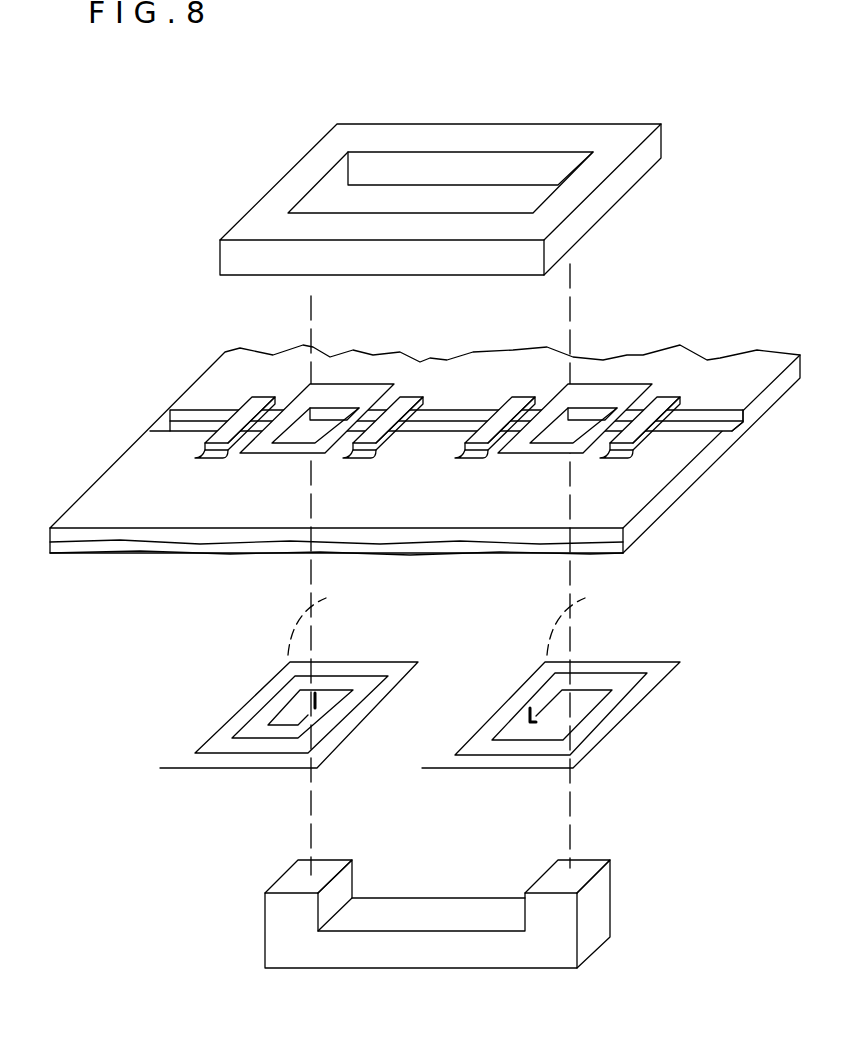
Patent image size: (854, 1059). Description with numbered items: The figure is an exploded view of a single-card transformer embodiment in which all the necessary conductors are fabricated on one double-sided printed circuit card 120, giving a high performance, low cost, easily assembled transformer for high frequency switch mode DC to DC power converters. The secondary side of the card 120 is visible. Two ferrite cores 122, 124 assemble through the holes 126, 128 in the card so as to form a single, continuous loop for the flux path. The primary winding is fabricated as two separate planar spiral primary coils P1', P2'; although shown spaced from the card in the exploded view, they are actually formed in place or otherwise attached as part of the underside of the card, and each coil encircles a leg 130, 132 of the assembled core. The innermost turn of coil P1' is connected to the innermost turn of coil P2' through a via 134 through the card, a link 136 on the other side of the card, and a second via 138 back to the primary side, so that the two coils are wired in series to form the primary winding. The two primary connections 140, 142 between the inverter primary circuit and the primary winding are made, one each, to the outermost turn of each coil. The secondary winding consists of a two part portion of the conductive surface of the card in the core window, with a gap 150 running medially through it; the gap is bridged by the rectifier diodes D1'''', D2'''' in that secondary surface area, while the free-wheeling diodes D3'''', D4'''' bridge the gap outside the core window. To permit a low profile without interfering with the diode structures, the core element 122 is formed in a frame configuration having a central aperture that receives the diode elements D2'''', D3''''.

The double-sided printed circuit card 120 is at (728, 380).
The ferrite core 122 is at (597, 140).
The ferrite core 124 is at (588, 925).
The hole 126 is at (307, 442).
The hole 128 is at (587, 423).
The leg 130 is at (298, 883).
The leg 132 is at (581, 872).
The via 134 is at (293, 717).
The link 136 is at (443, 420).
The second via 138 is at (558, 722).
The primary connection 140 is at (535, 662).
The primary connection 142 is at (280, 660).
The gap 150 is at (747, 433).
The rectifier diode D1'''' is at (415, 459).
The rectifier diode D2'''' is at (495, 372).
The free-wheeling diode D3'''' is at (192, 386).
The free-wheeling diode D4'''' is at (610, 454).
The planar spiral primary coil P1' is at (250, 715).
The planar spiral primary coil P2' is at (592, 715).